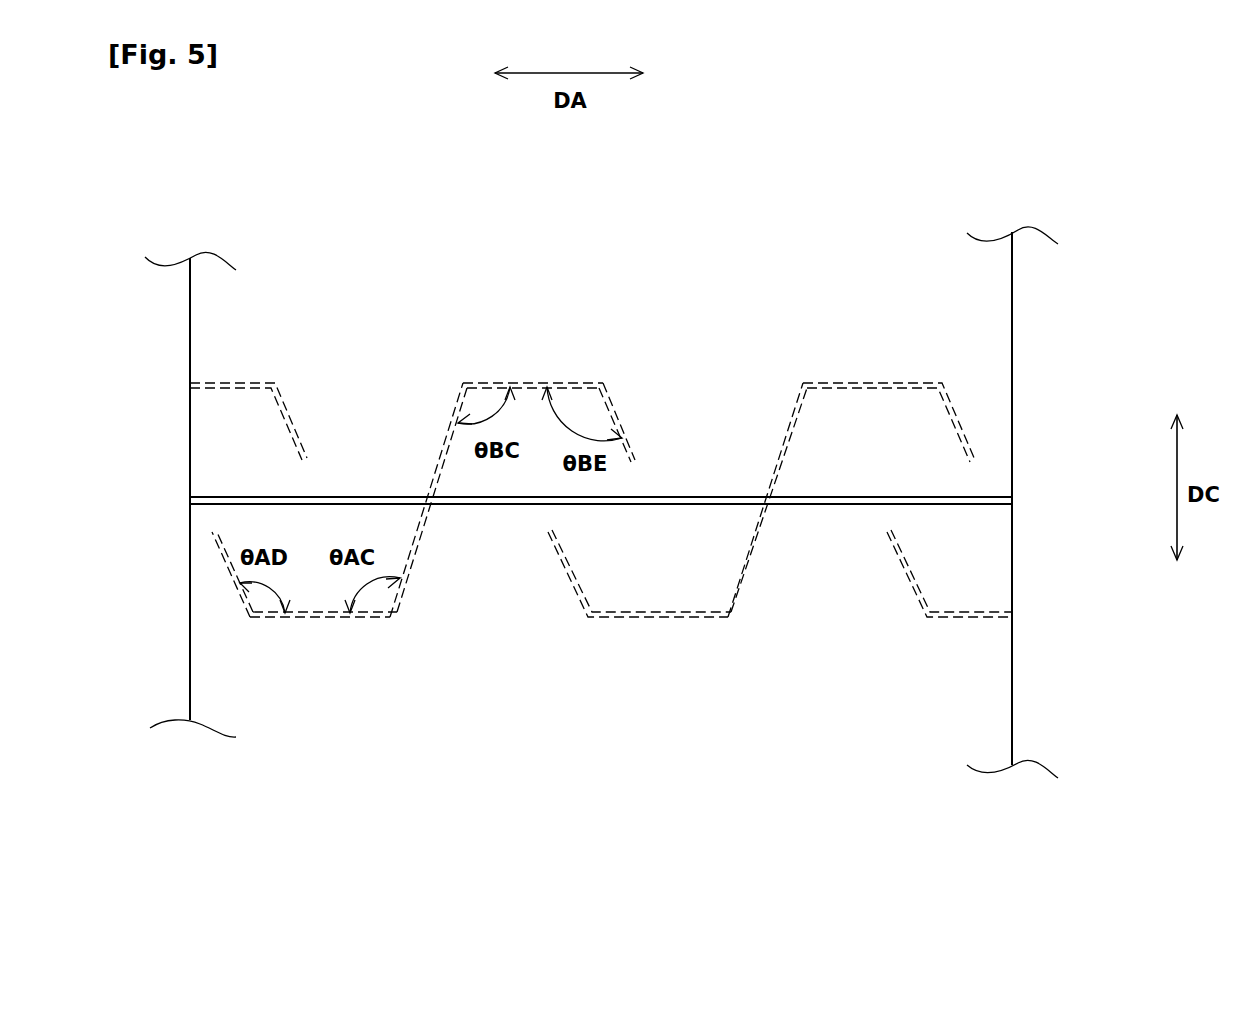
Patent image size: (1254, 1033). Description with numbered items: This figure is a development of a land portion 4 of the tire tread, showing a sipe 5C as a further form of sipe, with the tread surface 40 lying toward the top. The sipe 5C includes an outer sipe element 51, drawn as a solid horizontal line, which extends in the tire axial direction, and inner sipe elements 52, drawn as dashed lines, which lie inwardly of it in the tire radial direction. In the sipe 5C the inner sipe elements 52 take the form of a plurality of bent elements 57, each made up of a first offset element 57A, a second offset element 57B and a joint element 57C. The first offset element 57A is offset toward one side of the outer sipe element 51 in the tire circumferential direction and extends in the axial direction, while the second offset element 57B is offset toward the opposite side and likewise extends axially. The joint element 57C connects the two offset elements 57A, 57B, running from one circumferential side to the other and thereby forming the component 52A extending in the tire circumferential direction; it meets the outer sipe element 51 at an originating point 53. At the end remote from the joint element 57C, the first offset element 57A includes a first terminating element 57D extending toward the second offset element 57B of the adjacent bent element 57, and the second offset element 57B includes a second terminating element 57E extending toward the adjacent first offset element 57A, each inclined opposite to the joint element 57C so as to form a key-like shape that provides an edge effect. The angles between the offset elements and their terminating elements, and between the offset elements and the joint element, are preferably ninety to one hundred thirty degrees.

The land portion 4 is at (988, 325).
The tread surface 40 is at (868, 342).
The outer sipe element 51 is at (716, 497).
The inner sipe element 52 is at (232, 380).
The component extending in the tire circumferential direction 52A is at (975, 405).
The originating point 53 is at (430, 505).
The bent element 57 is at (658, 618).
The first offset element 57A is at (290, 618).
The second offset element 57B is at (532, 383).
The joint element 57C is at (448, 428).
The first terminating element 57D is at (233, 580).
The second terminating element 57E is at (619, 420).
The sipe 5C is at (485, 505).